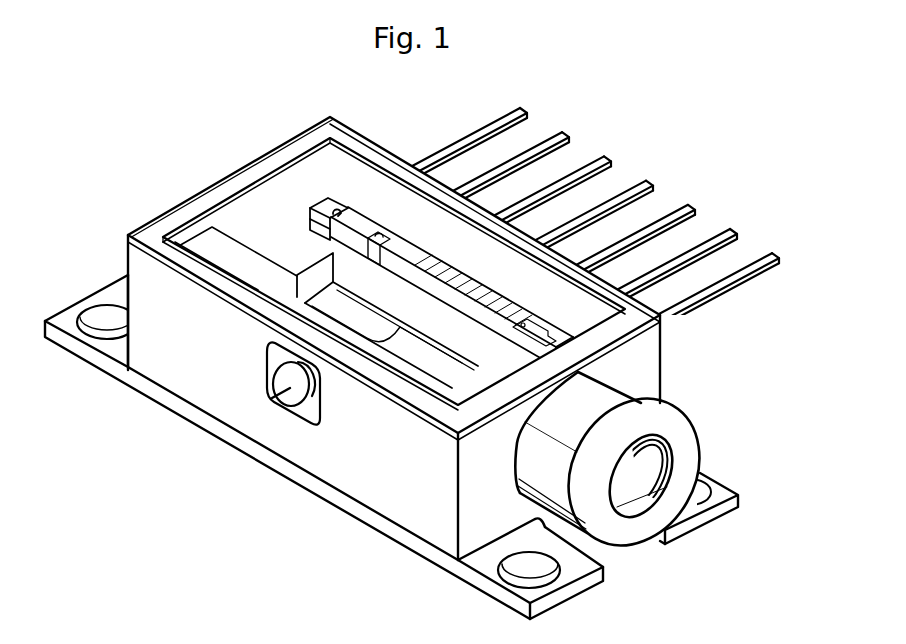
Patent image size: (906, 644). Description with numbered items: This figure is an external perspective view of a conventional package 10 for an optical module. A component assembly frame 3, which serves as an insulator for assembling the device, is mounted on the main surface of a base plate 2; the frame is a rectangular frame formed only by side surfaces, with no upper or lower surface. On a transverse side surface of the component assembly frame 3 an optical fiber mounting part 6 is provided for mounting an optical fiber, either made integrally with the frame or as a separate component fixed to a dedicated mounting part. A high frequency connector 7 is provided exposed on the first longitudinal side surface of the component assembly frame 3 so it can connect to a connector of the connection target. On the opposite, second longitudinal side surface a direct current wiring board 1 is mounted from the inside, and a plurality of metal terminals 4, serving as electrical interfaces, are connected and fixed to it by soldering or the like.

The direct current wiring board 1 is at (323, 205).
The base plate 2 is at (437, 557).
The component assembly frame 3 is at (183, 382).
The metal terminals 4 is at (457, 142).
The optical fiber mounting part 6 is at (647, 408).
The high frequency connector 7 is at (278, 420).
The package for an optical module 10 is at (453, 323).